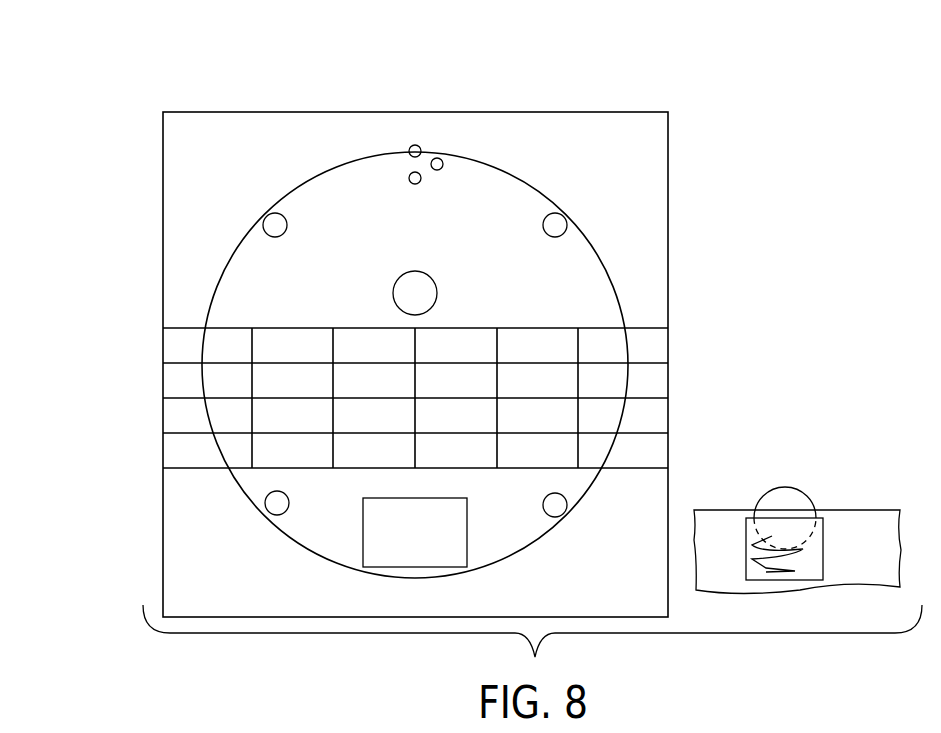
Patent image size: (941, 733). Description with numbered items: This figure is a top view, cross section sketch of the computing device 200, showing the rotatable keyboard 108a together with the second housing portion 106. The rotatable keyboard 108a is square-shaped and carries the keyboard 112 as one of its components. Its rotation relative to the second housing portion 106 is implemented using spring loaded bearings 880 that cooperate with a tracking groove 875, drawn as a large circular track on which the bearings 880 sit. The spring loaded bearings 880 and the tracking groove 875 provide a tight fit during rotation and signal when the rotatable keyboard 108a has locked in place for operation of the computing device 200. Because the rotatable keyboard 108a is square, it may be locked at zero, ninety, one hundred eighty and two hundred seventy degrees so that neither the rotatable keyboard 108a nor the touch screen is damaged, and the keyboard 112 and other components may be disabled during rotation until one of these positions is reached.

The computing device 200 is at (120, 84).
The second housing portion 106 is at (163, 175).
The rotatable keyboard 108a is at (200, 243).
The keyboard 112 is at (218, 345).
The tracking groove 875 is at (316, 553).
The spring loaded bearings 880 is at (556, 223).